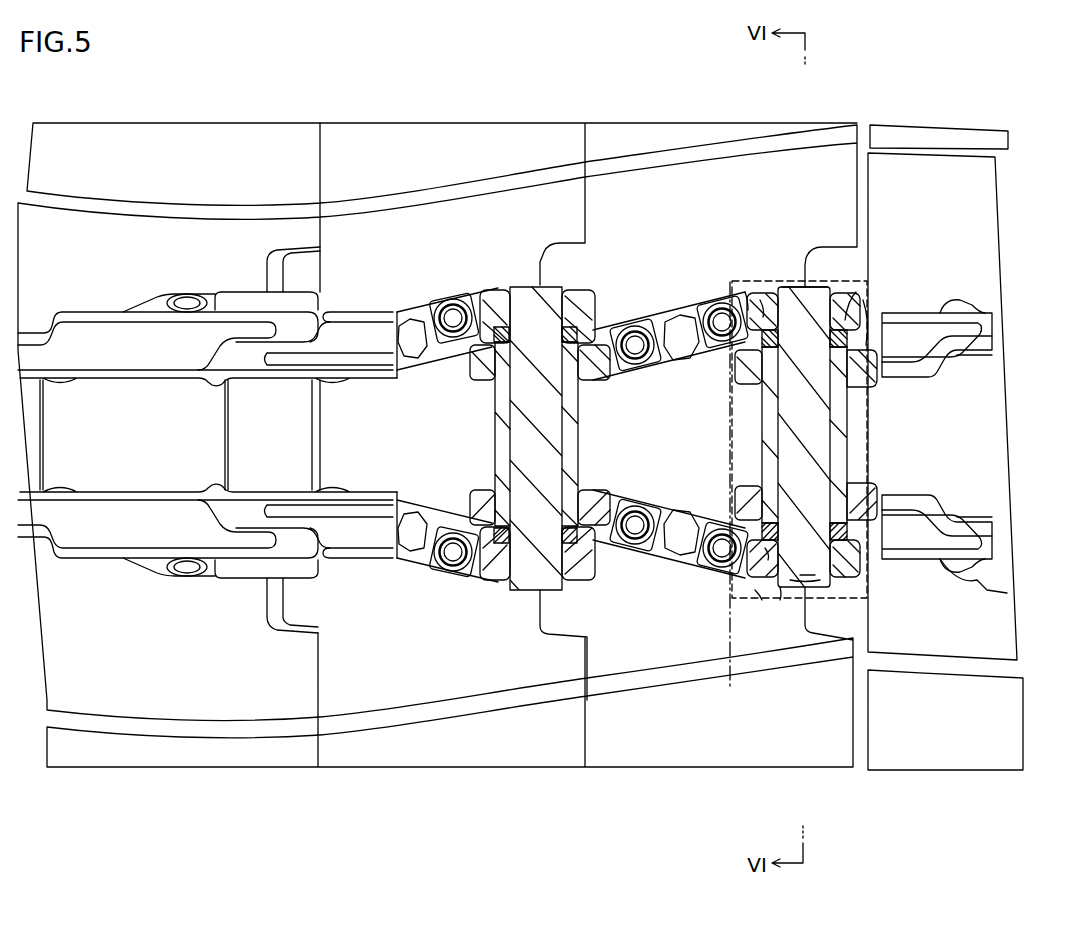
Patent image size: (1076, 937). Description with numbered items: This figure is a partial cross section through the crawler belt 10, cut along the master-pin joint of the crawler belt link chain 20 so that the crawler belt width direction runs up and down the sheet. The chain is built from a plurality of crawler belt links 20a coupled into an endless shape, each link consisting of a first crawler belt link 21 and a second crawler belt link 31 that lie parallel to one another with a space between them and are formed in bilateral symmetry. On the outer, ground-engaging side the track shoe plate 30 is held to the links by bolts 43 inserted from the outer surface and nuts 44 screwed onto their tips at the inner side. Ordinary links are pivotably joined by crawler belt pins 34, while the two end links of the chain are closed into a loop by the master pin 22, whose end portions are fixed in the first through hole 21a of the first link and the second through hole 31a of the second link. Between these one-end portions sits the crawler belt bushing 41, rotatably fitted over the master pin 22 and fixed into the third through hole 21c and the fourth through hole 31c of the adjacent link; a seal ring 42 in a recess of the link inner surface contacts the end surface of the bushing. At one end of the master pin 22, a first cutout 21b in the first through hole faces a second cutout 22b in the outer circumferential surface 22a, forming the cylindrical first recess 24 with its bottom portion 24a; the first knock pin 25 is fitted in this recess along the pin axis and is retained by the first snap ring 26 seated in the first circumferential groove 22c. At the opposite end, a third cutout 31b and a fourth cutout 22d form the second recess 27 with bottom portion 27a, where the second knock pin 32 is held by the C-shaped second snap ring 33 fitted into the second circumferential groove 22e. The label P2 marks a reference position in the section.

The crawler belt 10 is at (979, 92).
The crawler belt link chain 20 is at (396, 592).
The crawler belt link 20a is at (451, 593).
The first crawler belt link 21 is at (870, 512).
The first through hole 21a is at (572, 592).
The first cutout 21b is at (760, 592).
The third through hole 21c is at (875, 517).
The master pin 22 is at (803, 477).
The outer circumferential surface 22a is at (805, 592).
The second cutout 22b is at (800, 592).
The first circumferential groove 22c is at (818, 565).
The fourth cutout 22d is at (787, 293).
The second circumferential groove 22e is at (845, 320).
The first recess 24 is at (715, 567).
The bottom portion 24a is at (790, 565).
The first knock pin 25 is at (780, 600).
The first snap ring 26 is at (768, 560).
The second recess 27 is at (803, 300).
The bottom portion 27a is at (832, 300).
The track shoe plate 30 is at (612, 195).
The second crawler belt link 31 is at (878, 290).
The second through hole 31a is at (578, 300).
The third cutout 31b is at (745, 300).
The fourth through hole 31c is at (502, 330).
The second knock pin 32 is at (735, 297).
The second snap ring 33 is at (760, 298).
The crawler belt pin 34 is at (525, 313).
The crawler belt bushing 41 is at (840, 423).
The seal ring 42 is at (880, 325).
The bolt 43 is at (650, 330).
The nut 44 is at (685, 320).
The axis P2 is at (740, 445).